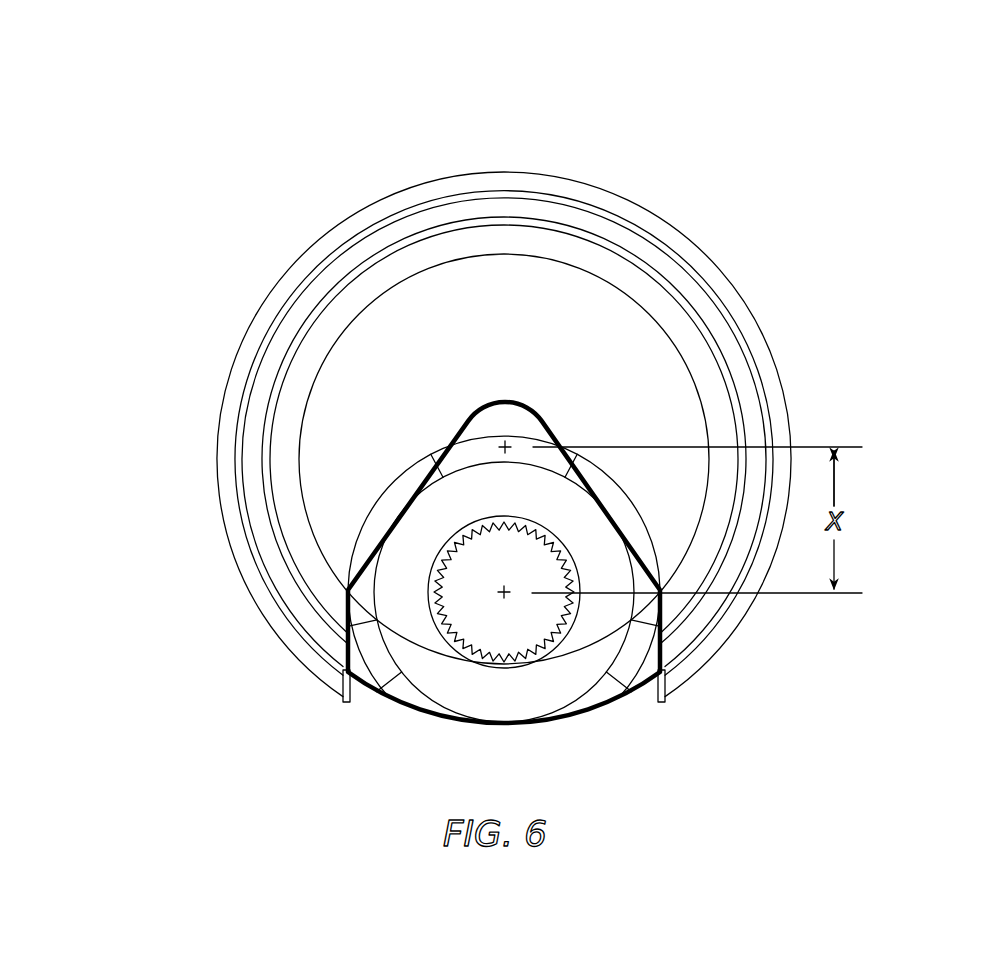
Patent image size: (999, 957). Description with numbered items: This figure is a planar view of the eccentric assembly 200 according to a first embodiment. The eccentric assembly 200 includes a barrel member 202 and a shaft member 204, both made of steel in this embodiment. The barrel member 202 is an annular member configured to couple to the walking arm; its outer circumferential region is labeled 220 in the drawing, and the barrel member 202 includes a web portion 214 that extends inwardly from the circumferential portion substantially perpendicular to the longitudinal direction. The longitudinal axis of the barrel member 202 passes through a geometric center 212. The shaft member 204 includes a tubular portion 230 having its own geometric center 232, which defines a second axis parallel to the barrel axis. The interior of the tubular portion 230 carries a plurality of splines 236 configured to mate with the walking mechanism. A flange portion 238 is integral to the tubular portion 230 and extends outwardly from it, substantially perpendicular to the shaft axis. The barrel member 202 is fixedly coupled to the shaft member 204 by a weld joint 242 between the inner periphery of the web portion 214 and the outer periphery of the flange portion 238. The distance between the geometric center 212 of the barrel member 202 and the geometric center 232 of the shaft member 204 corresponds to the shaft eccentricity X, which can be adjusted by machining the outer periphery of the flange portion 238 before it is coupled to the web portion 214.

The eccentric assembly 200 is at (852, 111).
The barrel member 202 is at (756, 267).
The shaft member 204 is at (617, 710).
The geometric center 212 is at (503, 438).
The web portion 214 is at (598, 300).
The outer tread 220 is at (556, 185).
The tubular portion 230 is at (406, 584).
The geometric center 232 is at (500, 596).
The plurality of splines 236 is at (534, 640).
The flange portion 238 is at (483, 423).
The weld joint 242 is at (443, 420).